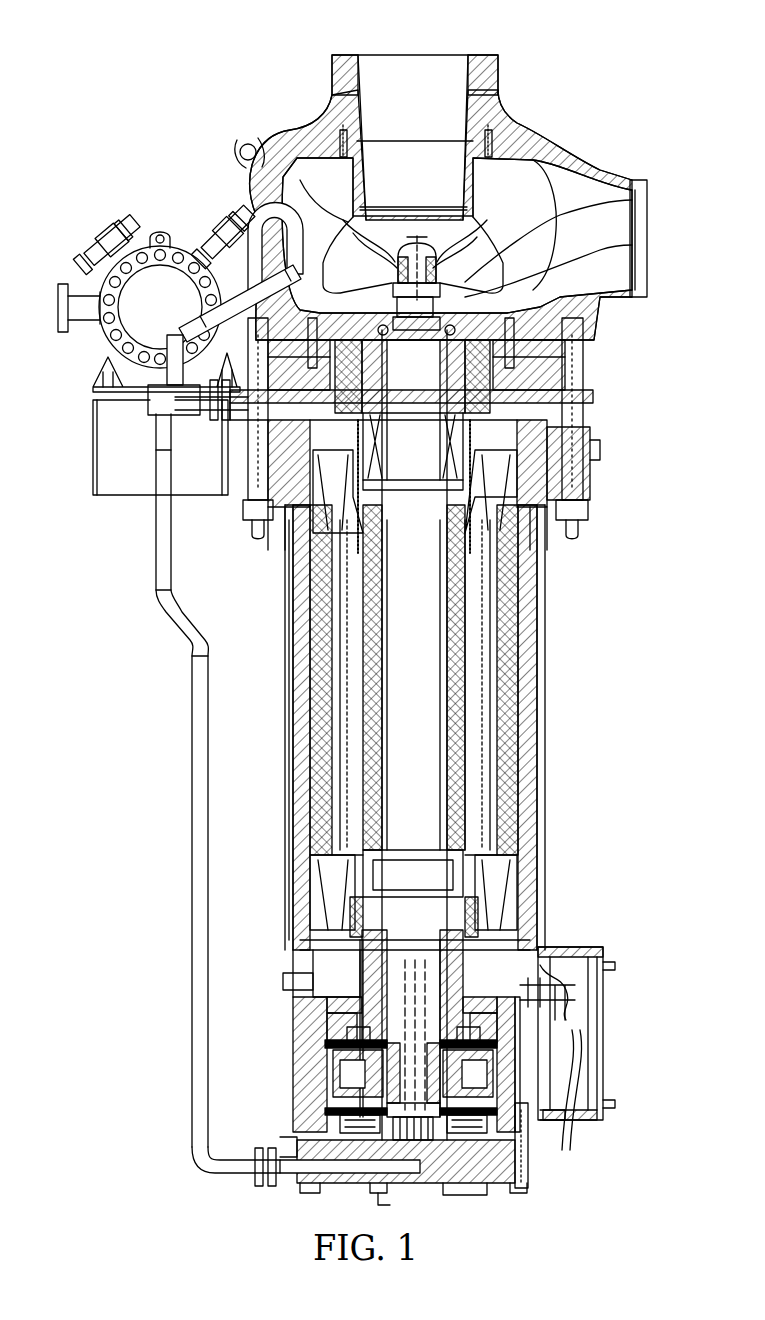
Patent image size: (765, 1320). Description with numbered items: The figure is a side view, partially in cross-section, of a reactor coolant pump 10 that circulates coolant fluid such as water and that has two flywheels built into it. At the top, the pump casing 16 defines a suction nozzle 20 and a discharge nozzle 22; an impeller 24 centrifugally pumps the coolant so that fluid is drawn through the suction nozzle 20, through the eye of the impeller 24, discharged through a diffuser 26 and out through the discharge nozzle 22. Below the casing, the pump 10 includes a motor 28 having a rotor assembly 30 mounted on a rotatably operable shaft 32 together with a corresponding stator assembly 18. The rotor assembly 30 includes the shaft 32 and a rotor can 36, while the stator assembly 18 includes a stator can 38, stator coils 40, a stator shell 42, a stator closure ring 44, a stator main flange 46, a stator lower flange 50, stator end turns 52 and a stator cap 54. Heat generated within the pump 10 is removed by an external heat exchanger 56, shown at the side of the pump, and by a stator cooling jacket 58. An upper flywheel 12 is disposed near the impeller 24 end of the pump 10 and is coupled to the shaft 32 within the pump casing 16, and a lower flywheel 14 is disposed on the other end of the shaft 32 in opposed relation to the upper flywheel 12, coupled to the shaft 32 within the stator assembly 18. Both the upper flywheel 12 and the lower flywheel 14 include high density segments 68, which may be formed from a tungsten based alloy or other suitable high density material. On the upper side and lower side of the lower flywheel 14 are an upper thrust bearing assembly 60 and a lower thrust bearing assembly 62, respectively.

The reactor coolant pump 10 is at (640, 80).
The upper flywheel 12 is at (580, 358).
The lower flywheel 14 is at (575, 1040).
The casing 16 is at (500, 125).
The stator assembly 18 is at (510, 682).
The suction nozzle 20 is at (430, 70).
The discharge nozzle 22 is at (647, 265).
The impeller 24 is at (647, 202).
The diffuser 26 is at (647, 243).
The motor 28 is at (574, 592).
The rotor assembly 30 is at (470, 720).
The shaft 32 is at (560, 382).
The rotor can 36 is at (530, 765).
The stator can 38 is at (545, 880).
The stator coils 40 is at (345, 722).
The stator shell 42 is at (298, 788).
The stator closure ring 44 is at (590, 403).
The stator main flange 46 is at (598, 480).
The stator lower flange 50 is at (288, 1070).
The stator end turns 52 is at (525, 920).
The stator cap 54 is at (535, 1175).
The external heat exchanger 56 is at (130, 242).
The stator cooling jacket 58 is at (550, 640).
The upper thrust bearing assembly 60 is at (330, 1045).
The lower thrust bearing assembly 62 is at (322, 1132).
The high density segments 68 is at (590, 345).